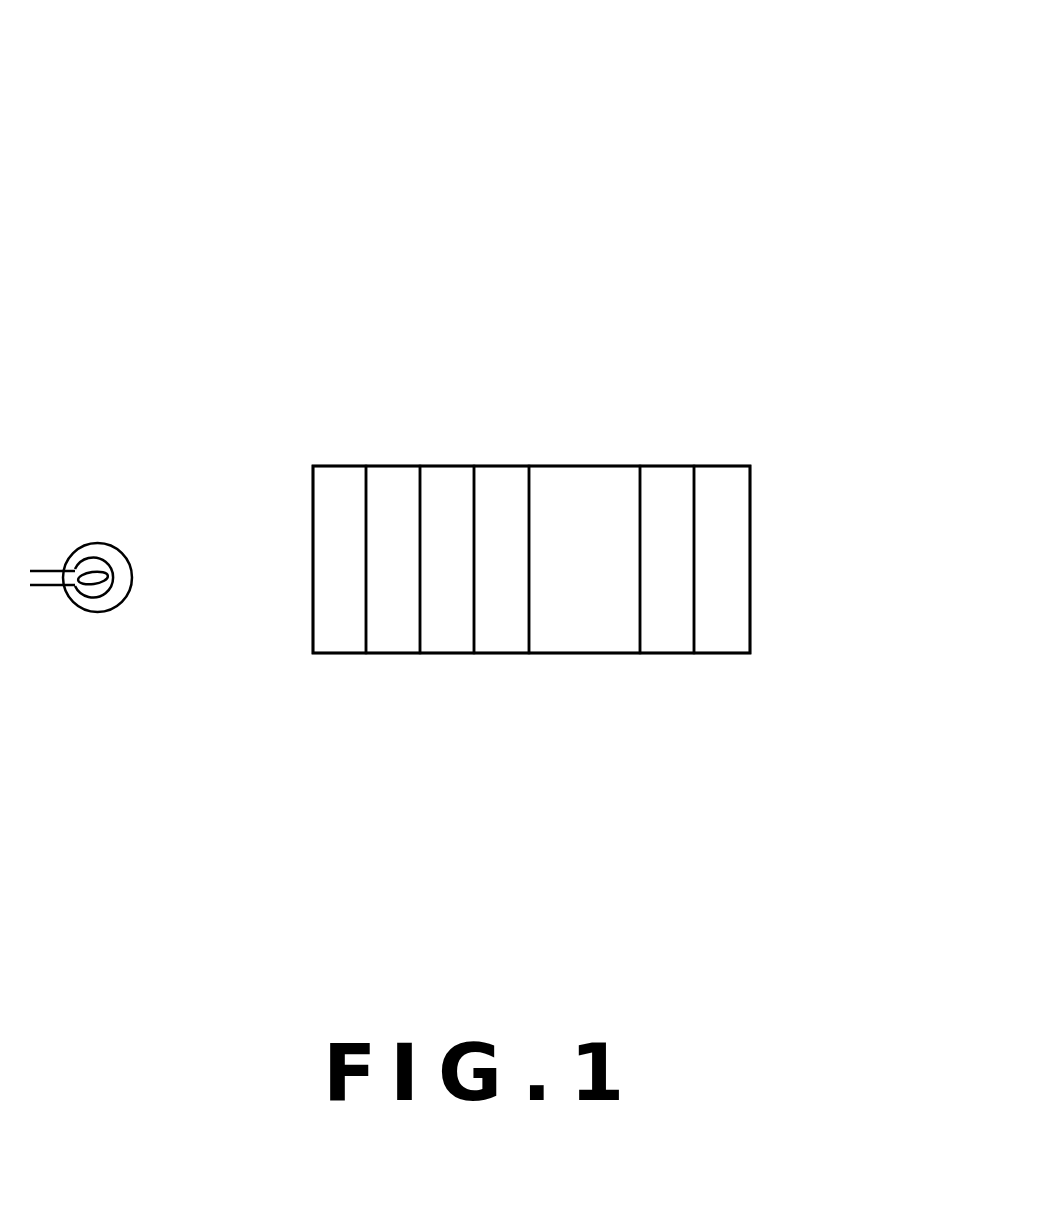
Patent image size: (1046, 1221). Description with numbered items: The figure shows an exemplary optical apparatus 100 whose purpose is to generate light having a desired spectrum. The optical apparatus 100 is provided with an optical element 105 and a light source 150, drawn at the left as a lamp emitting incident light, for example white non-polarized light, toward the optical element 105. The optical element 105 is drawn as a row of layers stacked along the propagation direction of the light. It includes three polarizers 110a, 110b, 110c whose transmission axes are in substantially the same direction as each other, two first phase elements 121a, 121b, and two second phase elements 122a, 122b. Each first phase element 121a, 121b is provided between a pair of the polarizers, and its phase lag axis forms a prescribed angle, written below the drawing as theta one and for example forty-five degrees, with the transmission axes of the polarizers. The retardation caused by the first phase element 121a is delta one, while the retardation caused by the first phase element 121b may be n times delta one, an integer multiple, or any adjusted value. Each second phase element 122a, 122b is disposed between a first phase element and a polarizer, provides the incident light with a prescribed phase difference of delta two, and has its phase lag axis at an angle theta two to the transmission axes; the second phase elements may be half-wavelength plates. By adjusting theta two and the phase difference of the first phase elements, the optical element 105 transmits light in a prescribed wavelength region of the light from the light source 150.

The optical apparatus 100 is at (892, 47).
The optical element 105 is at (793, 268).
The polarizer 110a is at (345, 466).
The polarizer 110b is at (523, 466).
The polarizer 110c is at (742, 466).
The first phase element 121a is at (407, 466).
The first phase element 121b is at (618, 466).
The second phase element 122a is at (452, 466).
The second phase element 122b is at (672, 466).
The light source 150 is at (98, 543).